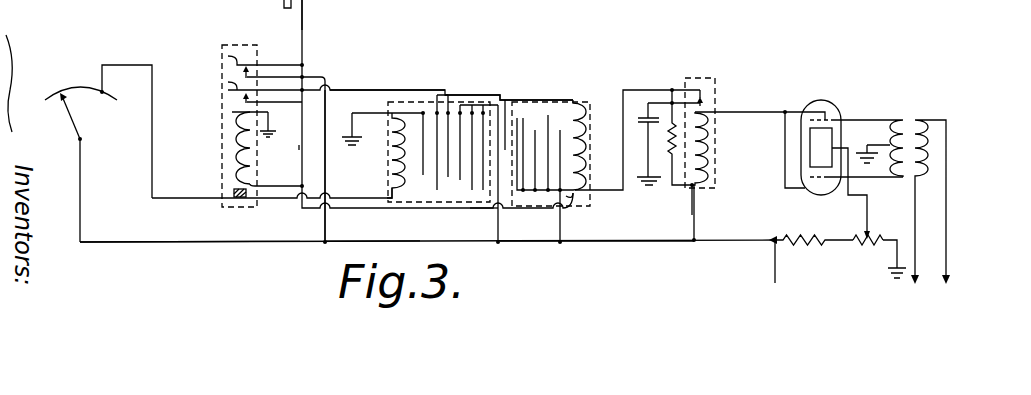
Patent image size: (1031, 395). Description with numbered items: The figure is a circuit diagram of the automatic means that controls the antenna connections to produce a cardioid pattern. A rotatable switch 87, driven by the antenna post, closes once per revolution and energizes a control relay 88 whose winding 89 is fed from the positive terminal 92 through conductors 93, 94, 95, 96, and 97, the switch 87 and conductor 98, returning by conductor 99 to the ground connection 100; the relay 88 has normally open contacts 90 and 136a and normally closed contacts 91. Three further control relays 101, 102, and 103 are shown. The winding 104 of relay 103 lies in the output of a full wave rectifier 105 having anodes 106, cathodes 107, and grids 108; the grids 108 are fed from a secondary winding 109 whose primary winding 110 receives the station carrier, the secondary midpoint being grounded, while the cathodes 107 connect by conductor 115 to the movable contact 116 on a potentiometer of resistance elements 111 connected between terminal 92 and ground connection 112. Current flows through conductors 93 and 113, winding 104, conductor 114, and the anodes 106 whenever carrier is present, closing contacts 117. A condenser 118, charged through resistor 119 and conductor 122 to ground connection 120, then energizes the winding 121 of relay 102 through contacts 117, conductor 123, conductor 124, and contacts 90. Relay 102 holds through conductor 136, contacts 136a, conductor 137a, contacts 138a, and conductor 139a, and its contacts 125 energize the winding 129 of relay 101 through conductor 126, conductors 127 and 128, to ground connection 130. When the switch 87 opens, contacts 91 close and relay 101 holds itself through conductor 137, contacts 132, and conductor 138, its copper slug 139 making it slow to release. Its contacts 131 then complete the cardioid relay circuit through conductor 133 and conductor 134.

The rotatable switch 87 is at (83, 86).
The control relay 88 is at (385, 171).
The energizing winding 89 is at (392, 132).
The normally open contacts 90 is at (432, 173).
The normally closed contacts 91 is at (455, 175).
The positive terminal of source of energy 92 is at (774, 278).
The conductor 93 is at (716, 240).
The conductor 94 is at (633, 241).
The conductor 95 is at (537, 243).
The conductor 96 is at (372, 243).
The conductor 97 is at (177, 243).
The conductor 98 is at (152, 147).
The conductor 99 is at (371, 109).
The ground connection 100 is at (346, 129).
The control relay 101 is at (220, 108).
The control relay 102 is at (593, 98).
The control relay 103 is at (720, 163).
The energizing winding 104 is at (712, 132).
The full wave rectifier 105 is at (828, 102).
The plates or anodes 106 is at (812, 110).
The cathodes 107 is at (849, 152).
The control elements or grids 108 is at (828, 177).
The secondary winding 109 is at (907, 122).
The primary winding 110 is at (924, 146).
The resistance elements 111 is at (857, 246).
The ground connection 112 is at (893, 275).
The conductor 113 is at (696, 203).
The conductor 114 is at (730, 110).
The conductor 115 is at (848, 193).
The movable contact 116 is at (861, 233).
The contacts 117 is at (700, 81).
The condenser 118 is at (647, 125).
The resistor 119 is at (671, 143).
The ground connection 120 is at (649, 188).
The winding 121 is at (587, 140).
The conductor 122 is at (667, 103).
The conductor 123 is at (622, 89).
The conductor 124 is at (497, 96).
The contacts 125 is at (560, 119).
The conductor 126 is at (561, 232).
The conductor 127 is at (433, 210).
The conductor 128 is at (258, 184).
The winding 129 is at (230, 152).
The ground connection 130 is at (274, 121).
The relay contacts 131 is at (228, 56).
The contacts 132 is at (228, 82).
The conductor 133 is at (324, 222).
The conductor 134 is at (302, 25).
The conductor 136 is at (499, 227).
The normally open contacts 136a is at (477, 192).
The conductor 137 is at (380, 90).
The conductor 137a is at (503, 148).
The conductor 138 is at (300, 147).
The contacts 138a is at (533, 118).
The copper slug 139 is at (233, 198).
The conductor 139a is at (566, 196).